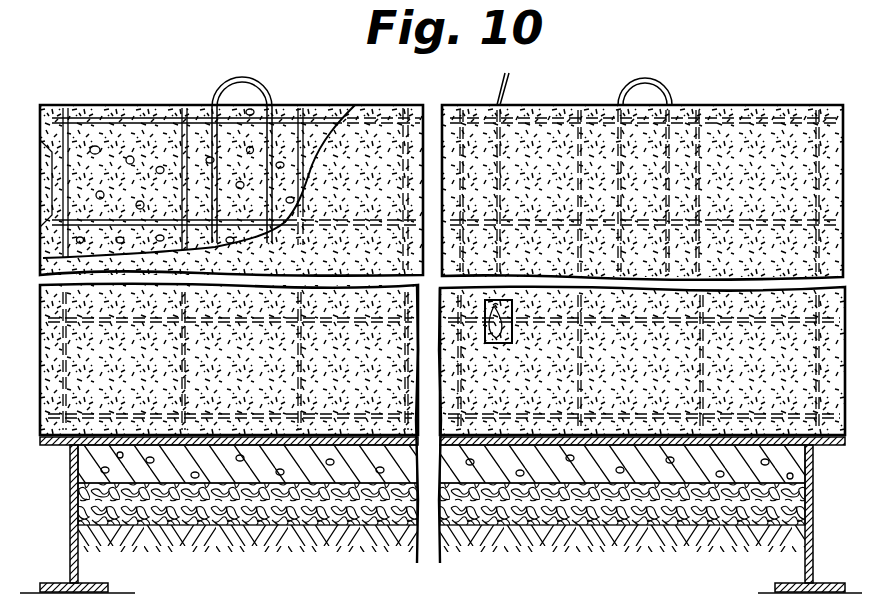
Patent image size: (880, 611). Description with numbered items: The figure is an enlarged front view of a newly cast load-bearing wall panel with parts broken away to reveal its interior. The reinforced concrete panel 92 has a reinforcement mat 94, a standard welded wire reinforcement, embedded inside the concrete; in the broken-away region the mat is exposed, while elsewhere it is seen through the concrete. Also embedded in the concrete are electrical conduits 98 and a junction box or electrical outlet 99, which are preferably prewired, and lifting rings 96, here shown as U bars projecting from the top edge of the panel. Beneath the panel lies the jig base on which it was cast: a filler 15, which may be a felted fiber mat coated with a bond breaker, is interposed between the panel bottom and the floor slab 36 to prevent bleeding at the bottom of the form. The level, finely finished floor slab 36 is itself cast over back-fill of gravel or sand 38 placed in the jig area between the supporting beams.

The filler 15 is at (213, 438).
The floor slab 36 is at (320, 453).
The gravel or sand 38 is at (288, 518).
The reinforced concrete panel 92 is at (750, 142).
The reinforcement mat 94 is at (180, 196).
The lifting rings 96 is at (243, 78).
The electrical conduits 98 is at (503, 93).
The electrical outlets 99 is at (505, 345).